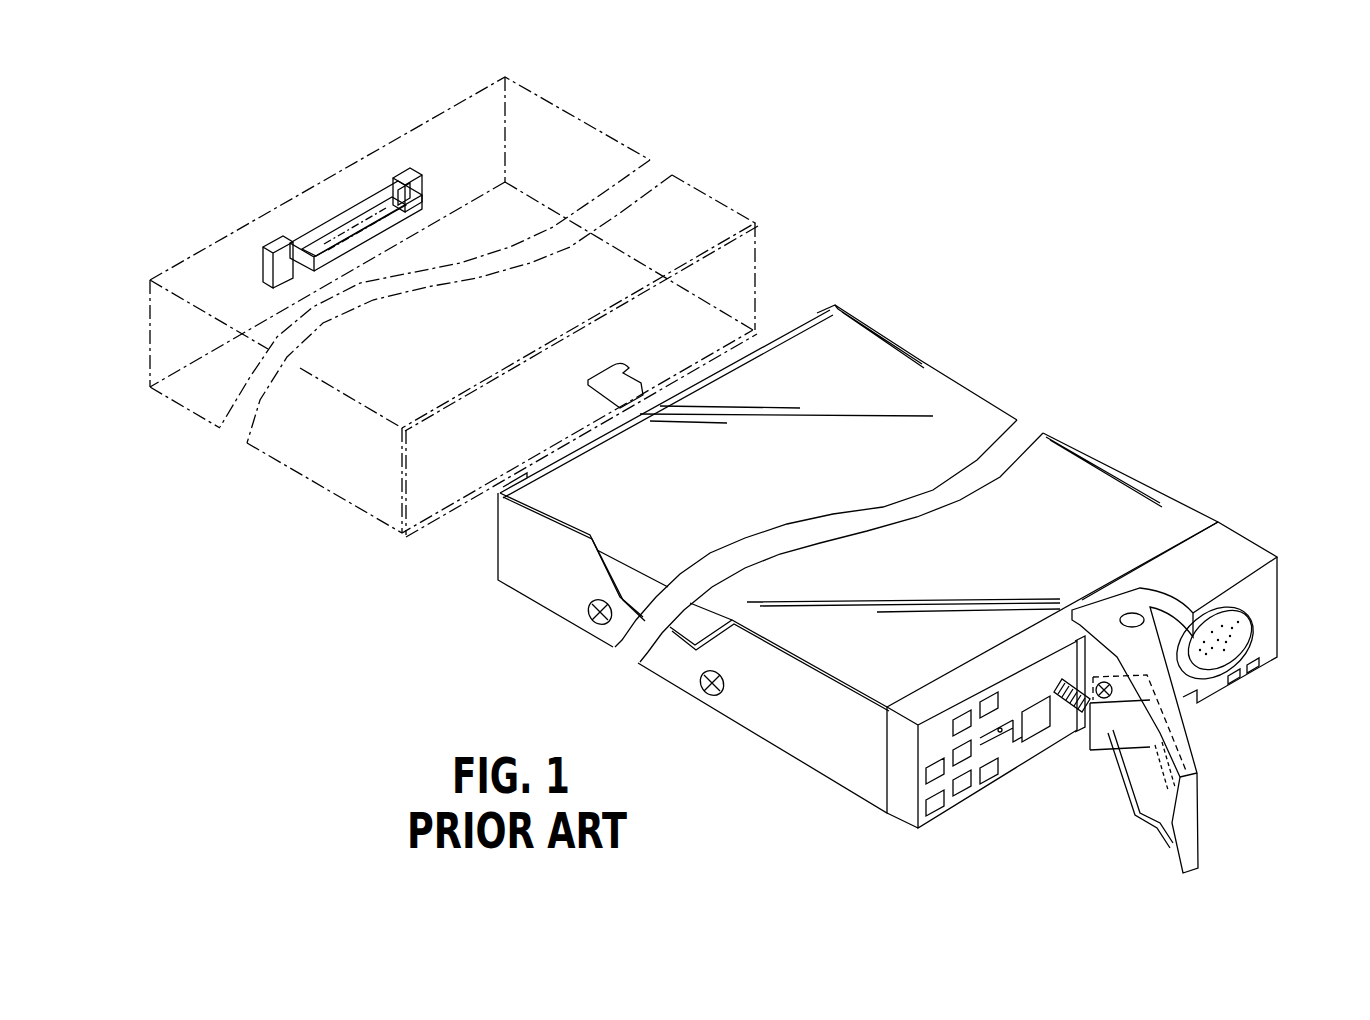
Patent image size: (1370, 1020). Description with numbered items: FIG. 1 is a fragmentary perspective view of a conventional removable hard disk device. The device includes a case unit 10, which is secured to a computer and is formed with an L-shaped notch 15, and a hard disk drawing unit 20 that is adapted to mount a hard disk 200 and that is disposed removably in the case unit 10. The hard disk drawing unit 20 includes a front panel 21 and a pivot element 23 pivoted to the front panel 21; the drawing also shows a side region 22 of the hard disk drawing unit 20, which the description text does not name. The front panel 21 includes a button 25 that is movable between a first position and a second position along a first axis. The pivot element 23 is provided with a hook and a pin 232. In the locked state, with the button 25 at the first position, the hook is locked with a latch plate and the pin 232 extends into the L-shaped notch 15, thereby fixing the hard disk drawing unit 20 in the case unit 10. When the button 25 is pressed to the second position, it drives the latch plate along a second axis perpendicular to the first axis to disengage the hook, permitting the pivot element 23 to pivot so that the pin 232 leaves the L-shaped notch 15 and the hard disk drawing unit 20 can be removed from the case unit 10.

The case unit 10 is at (691, 186).
The L-shaped notch 15 is at (627, 368).
The hard disk 200 is at (913, 377).
The hard disk drawing unit 20 is at (1226, 502).
The front panel 21 is at (1253, 538).
The side wall 22 is at (780, 727).
The pivot element 23 is at (1188, 760).
The button 25 is at (1235, 624).
The pin 232 is at (1105, 740).